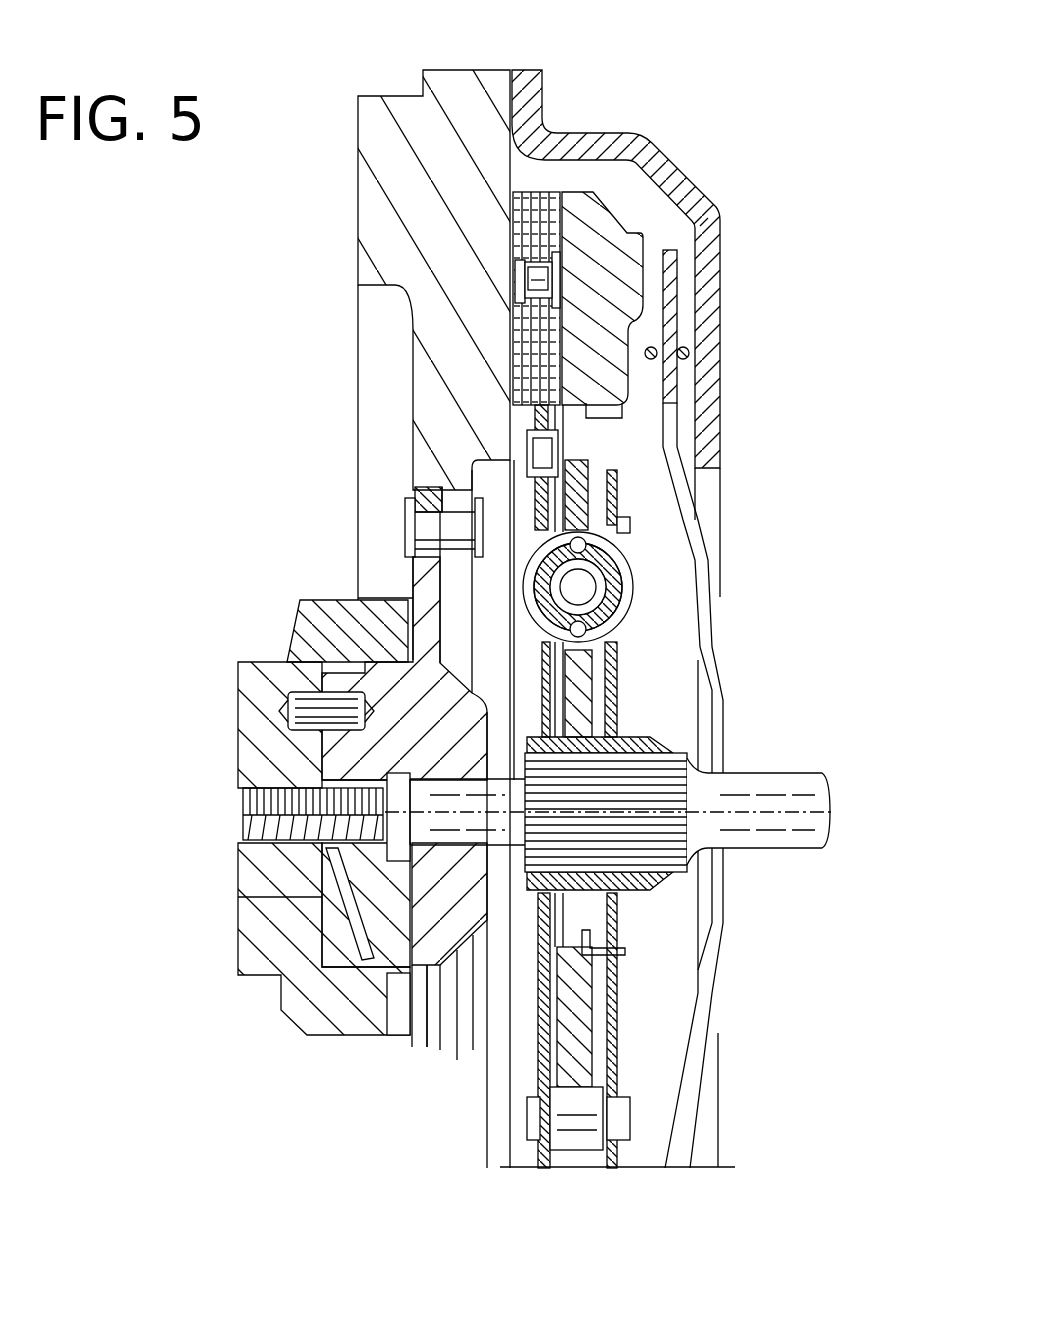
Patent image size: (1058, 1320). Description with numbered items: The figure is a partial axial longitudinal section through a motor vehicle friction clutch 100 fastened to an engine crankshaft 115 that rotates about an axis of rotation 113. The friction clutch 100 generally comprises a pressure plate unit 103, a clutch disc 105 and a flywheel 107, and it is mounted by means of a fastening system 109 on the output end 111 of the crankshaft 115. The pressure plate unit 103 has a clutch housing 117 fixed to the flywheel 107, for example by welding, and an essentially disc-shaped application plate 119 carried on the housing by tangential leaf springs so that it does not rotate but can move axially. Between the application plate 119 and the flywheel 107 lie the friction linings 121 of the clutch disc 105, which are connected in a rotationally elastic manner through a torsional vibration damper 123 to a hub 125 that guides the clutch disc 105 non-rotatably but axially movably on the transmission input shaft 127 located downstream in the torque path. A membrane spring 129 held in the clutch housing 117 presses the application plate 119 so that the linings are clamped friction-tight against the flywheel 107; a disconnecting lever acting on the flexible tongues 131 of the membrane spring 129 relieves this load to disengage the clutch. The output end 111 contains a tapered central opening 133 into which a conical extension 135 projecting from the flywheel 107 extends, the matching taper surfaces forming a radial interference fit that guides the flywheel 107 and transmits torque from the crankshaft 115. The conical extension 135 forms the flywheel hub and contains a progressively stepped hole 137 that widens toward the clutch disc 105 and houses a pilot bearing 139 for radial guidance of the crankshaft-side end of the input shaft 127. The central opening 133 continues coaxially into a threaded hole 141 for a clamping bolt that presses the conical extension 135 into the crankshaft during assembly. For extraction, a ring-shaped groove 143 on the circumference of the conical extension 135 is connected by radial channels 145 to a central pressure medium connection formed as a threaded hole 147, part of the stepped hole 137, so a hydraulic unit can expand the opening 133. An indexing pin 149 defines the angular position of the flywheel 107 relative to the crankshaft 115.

The friction clutch 100 is at (793, 262).
The pressure plate unit 103 is at (633, 128).
The clutch disc 105 is at (552, 180).
The flywheel 107 is at (386, 90).
The fastening system 109 is at (345, 590).
The output end 111 is at (322, 623).
The axis of rotation 113 is at (207, 832).
The crankshaft 115 is at (245, 680).
The clutch housing 117 is at (722, 238).
The application plate 119 is at (608, 240).
The friction linings 121 is at (513, 224).
The torsional vibration damper 123 is at (645, 592).
The hub 125 is at (652, 740).
The input shaft 127 is at (776, 793).
The membrane spring 129 is at (672, 308).
The flexible tongues 131 is at (702, 620).
The central opening 133 is at (333, 937).
The conical extension 135 is at (392, 1035).
The stepped hole 137 is at (430, 1050).
The pilot bearing 139 is at (474, 1052).
The threaded hole 141 is at (265, 785).
The ring-shaped groove 143 is at (312, 1028).
The radial channels 145 is at (322, 895).
The threaded hole 147 is at (345, 772).
The indexing pin 149 is at (287, 660).